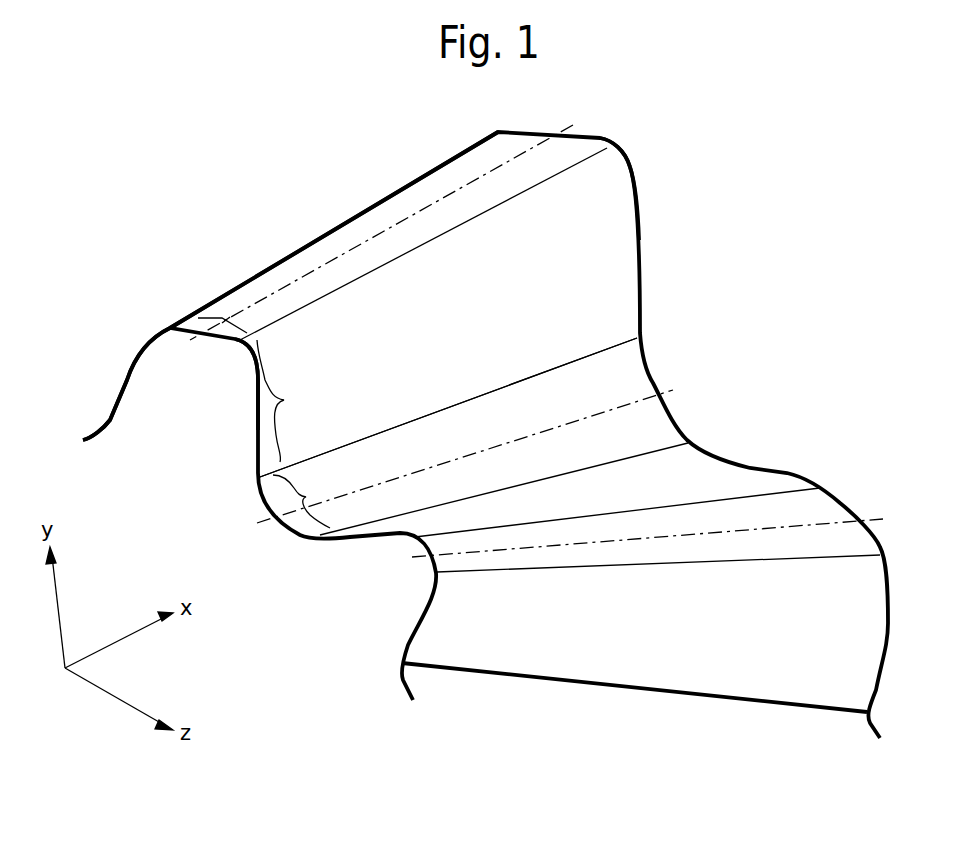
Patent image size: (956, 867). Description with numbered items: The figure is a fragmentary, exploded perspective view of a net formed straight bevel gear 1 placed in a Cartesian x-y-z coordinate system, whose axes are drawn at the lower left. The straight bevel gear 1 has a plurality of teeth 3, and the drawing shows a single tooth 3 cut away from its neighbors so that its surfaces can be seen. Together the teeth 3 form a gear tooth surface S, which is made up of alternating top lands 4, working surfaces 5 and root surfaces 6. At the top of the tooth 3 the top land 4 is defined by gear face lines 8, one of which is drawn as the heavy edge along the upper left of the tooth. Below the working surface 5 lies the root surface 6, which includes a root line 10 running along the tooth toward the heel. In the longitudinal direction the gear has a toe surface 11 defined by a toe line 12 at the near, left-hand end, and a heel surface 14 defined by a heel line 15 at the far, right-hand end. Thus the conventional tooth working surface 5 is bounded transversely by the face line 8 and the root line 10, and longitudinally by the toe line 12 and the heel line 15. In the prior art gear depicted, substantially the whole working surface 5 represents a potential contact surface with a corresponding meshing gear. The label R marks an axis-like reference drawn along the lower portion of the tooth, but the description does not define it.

The straight bevel gear 1 is at (663, 154).
The teeth 3 is at (607, 302).
The top land 4 is at (227, 318).
The working surface 5 is at (290, 400).
The root surface 6 is at (308, 497).
The gear face line 8 is at (363, 270).
The root line 10 is at (470, 381).
The toe surface 11 is at (202, 456).
The toe line 12 is at (253, 382).
The heel surface 14 is at (786, 440).
The heel line 15 is at (640, 218).
The gear tooth surface S is at (463, 260).
The axis R is at (465, 462).